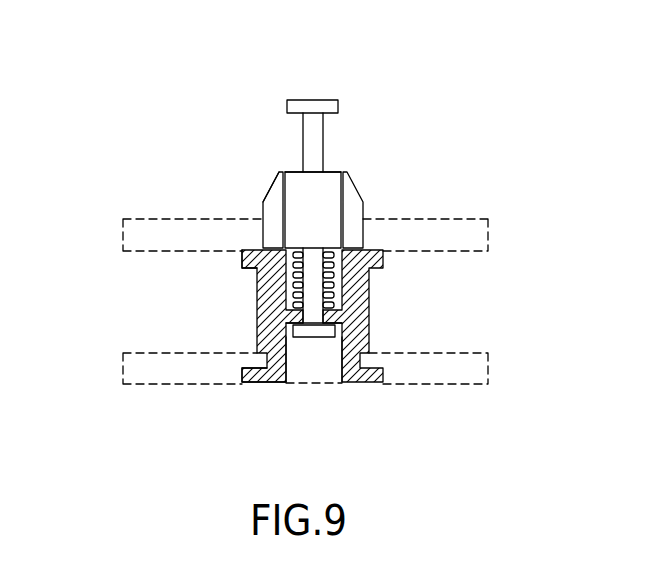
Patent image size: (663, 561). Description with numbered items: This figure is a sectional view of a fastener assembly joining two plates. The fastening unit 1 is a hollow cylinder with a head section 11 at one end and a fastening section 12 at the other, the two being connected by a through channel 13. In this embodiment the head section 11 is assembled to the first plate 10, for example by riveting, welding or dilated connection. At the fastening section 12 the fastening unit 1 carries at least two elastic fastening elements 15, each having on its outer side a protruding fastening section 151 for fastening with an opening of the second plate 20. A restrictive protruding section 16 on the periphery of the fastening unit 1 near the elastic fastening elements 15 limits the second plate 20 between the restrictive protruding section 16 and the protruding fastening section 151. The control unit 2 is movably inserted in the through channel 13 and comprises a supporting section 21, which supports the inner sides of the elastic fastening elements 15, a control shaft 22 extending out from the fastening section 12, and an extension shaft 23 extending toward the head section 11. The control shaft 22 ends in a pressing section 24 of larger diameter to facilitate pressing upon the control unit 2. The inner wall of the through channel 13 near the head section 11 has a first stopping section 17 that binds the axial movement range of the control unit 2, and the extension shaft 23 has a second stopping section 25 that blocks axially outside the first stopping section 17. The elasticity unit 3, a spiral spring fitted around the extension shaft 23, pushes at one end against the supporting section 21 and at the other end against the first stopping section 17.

The fastening unit 1 is at (360, 357).
The first plate 10 is at (123, 368).
The head section 11 is at (247, 382).
The fastening section 12 is at (283, 172).
The through channel 13 is at (290, 287).
The elastic fastening elements 15 is at (277, 235).
The protruding fastening section 151 is at (263, 215).
The restrictive protruding section 16 is at (245, 257).
The first stopping section 17 is at (290, 328).
The control unit 2 is at (348, 176).
The second plate 20 is at (123, 237).
The supporting section 21 is at (330, 198).
The control shaft 22 is at (312, 133).
The extension shaft 23 is at (314, 272).
The pressing section 24 is at (317, 100).
The second stopping section 25 is at (330, 330).
The elasticity unit 3 is at (343, 283).